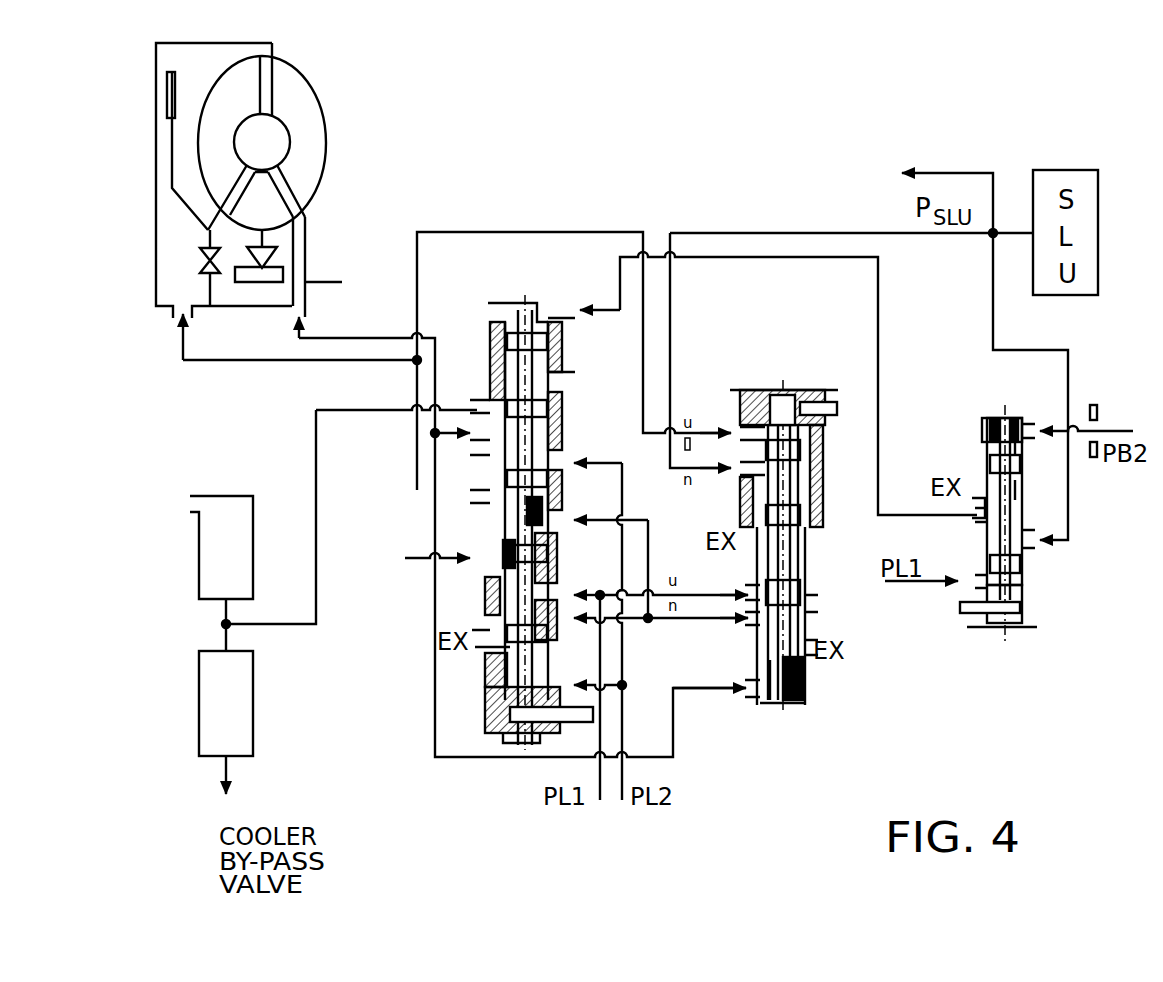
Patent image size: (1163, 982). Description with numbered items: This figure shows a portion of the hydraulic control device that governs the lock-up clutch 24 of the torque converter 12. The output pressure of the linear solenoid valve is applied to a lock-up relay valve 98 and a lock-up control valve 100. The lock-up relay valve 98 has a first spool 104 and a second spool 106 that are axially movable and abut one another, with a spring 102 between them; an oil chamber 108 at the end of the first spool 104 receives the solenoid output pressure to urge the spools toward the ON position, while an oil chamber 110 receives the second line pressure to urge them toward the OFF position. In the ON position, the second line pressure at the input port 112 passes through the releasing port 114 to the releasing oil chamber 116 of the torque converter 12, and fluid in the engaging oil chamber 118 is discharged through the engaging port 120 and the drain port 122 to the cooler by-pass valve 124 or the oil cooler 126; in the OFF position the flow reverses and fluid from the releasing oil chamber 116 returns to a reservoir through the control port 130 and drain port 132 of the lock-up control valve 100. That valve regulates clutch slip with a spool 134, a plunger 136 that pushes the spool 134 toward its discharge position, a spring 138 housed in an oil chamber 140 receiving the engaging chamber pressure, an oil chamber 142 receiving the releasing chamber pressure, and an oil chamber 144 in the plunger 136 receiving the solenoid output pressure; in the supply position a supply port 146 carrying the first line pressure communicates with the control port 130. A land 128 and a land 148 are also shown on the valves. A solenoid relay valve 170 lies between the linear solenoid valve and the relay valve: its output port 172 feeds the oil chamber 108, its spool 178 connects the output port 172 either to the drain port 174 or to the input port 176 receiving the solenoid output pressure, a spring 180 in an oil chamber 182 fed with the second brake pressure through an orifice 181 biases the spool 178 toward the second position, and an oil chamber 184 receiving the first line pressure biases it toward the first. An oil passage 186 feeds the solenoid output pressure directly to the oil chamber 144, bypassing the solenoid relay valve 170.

The torque converter 12 is at (337, 132).
The lock-up clutch 24 is at (165, 112).
The lock-up relay valve 98 is at (552, 226).
The lock-up control valve 100 is at (807, 714).
The spring 102 is at (488, 533).
The first spool 104 is at (557, 360).
The second spool 106 is at (488, 628).
The oil chamber 108 is at (508, 317).
The oil chamber 110 is at (500, 683).
The input port 112 is at (567, 462).
The releasing port 114 is at (470, 485).
The releasing oil chamber 116 is at (172, 244).
The engaging oil chamber 118 is at (170, 62).
The engaging port 120 is at (480, 447).
The drain port 122 is at (481, 402).
The cooler by-pass valve 124 is at (233, 741).
The oil cooler 126 is at (220, 510).
The land 128 is at (563, 513).
The control port 130 is at (758, 625).
The drain port 132 is at (805, 633).
The spool 134 is at (803, 633).
The plunger 136 is at (787, 498).
The spring 138 is at (777, 697).
The oil chamber 140 is at (803, 690).
The oil chamber 142 is at (807, 432).
The oil chamber 144 is at (817, 477).
The supply port 146 is at (763, 583).
The land 148 is at (543, 560).
The solenoid relay valve 170 is at (1017, 654).
The output port 172 is at (977, 520).
The drain port 174 is at (985, 470).
The input port 176 is at (1028, 545).
The spool 178 is at (1019, 535).
The spring 180 is at (983, 420).
The orifice 181 is at (1092, 458).
The oil chamber 182 is at (985, 428).
The oil chamber 184 is at (985, 585).
The oil passage 186 is at (748, 230).